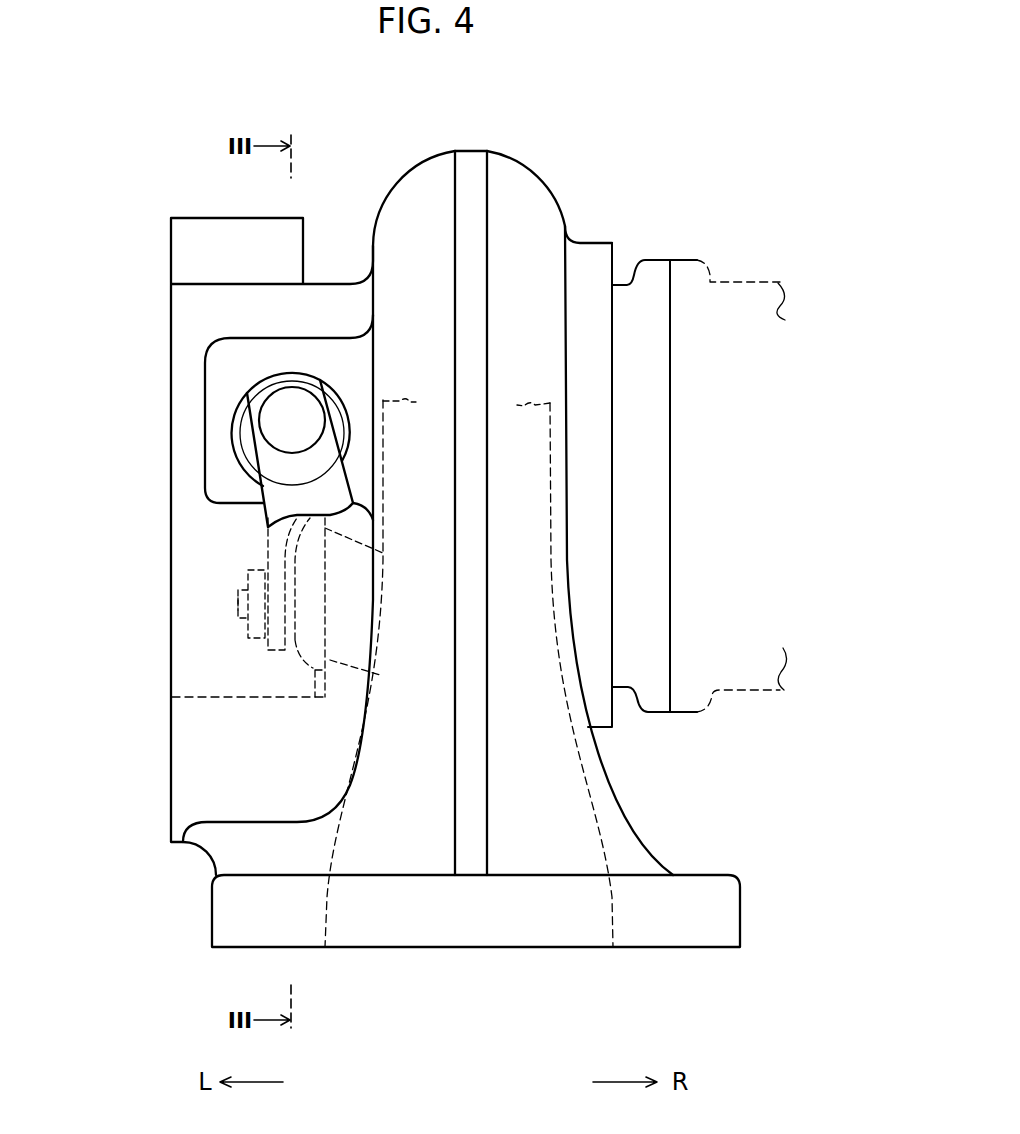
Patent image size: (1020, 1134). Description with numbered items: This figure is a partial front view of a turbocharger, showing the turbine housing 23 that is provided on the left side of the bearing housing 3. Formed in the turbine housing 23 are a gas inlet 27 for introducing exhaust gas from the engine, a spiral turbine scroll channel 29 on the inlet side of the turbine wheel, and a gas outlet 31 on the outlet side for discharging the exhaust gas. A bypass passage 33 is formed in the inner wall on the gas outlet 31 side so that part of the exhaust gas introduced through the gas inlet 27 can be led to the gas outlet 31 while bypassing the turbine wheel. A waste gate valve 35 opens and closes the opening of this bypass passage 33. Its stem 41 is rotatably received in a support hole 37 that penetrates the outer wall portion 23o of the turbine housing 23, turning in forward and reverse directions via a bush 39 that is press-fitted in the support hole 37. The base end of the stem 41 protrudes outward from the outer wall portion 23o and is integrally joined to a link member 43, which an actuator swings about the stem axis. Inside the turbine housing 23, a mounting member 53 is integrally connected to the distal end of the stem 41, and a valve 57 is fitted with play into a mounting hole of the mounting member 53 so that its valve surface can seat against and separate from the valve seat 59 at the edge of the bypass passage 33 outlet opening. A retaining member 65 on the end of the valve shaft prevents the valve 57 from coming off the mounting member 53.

The bearing housing 3 is at (742, 282).
The turbine housing 23 is at (535, 162).
The outer wall portion 23o is at (233, 363).
The gas inlet 27 is at (327, 897).
The turbine scroll channel 29 is at (548, 430).
The gas outlet 31 is at (227, 695).
The bypass passage 33 is at (320, 670).
The waste gate valve 35 is at (212, 572).
The support hole 37 is at (250, 478).
The bush 39 is at (238, 438).
The stem 41 is at (285, 423).
The link member 43 is at (330, 491).
The mounting member 53 is at (268, 650).
The valve 57 is at (295, 662).
The valve seat 59 is at (313, 668).
The retaining member 65 is at (248, 630).